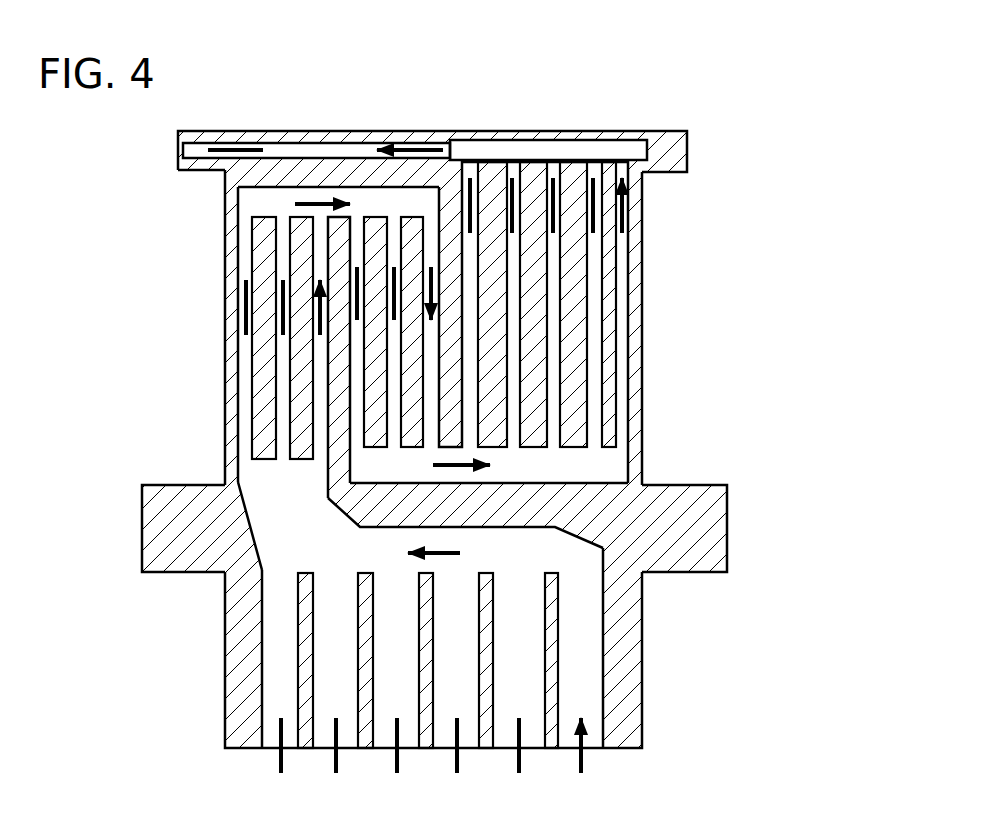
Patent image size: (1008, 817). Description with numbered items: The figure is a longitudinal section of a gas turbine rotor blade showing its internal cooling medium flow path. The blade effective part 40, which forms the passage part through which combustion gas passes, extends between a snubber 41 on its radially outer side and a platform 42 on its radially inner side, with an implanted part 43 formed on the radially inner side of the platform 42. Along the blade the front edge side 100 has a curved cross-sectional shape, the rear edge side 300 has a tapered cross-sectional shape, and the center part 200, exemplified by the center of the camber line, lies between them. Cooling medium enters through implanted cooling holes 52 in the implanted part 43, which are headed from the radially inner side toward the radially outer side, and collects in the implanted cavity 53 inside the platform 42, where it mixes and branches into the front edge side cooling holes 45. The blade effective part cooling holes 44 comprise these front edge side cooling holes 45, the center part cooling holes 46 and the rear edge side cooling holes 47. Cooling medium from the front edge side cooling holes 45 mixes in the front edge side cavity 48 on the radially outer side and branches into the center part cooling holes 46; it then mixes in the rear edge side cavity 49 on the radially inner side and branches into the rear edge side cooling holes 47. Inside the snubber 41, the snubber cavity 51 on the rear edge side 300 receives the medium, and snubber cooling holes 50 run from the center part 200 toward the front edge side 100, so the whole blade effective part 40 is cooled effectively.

The blade effective part 40 is at (664, 173).
The snubber 41 is at (665, 148).
The platform 42 is at (730, 485).
The implanted part 43 is at (730, 572).
The blade effective part cooling holes 44 is at (357, 330).
The front edge side cooling holes 45 is at (245, 352).
The center part cooling holes 46 is at (358, 380).
The rear edge side cooling holes 47 is at (470, 415).
The front edge side cavity 48 is at (262, 207).
The rear edge side cavity 49 is at (363, 464).
The snubber cooling holes 50 is at (304, 148).
The snubber cavity 51 is at (525, 150).
The implanted cooling holes 52 is at (273, 672).
The implanted cavity 53 is at (280, 545).
The front edge side 100 is at (208, 63).
The center part 200 is at (478, 63).
The rear edge side 300 is at (485, 63).